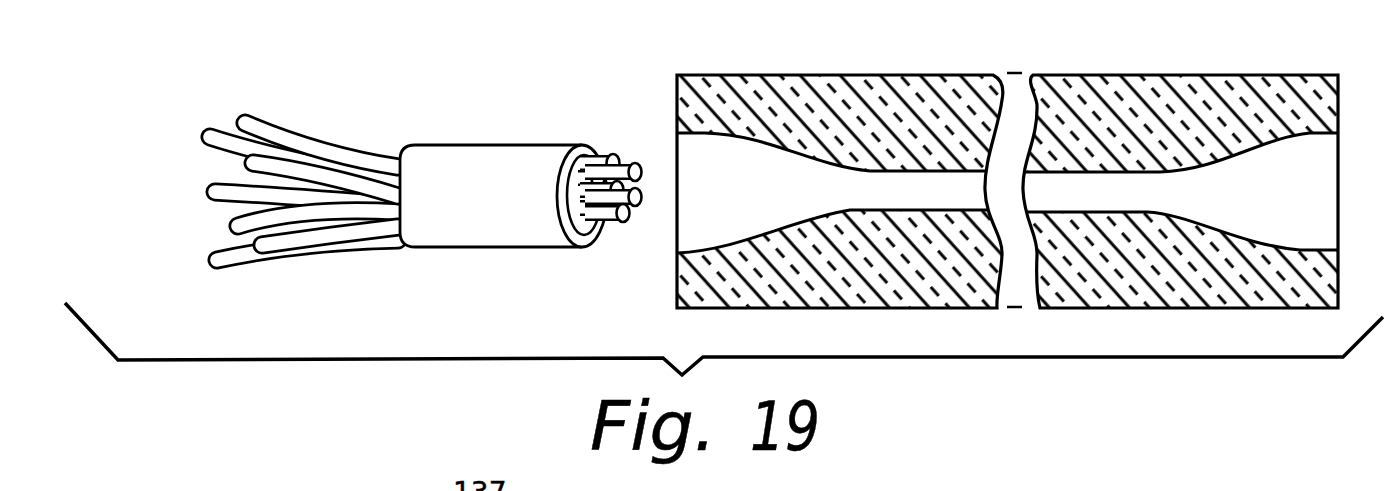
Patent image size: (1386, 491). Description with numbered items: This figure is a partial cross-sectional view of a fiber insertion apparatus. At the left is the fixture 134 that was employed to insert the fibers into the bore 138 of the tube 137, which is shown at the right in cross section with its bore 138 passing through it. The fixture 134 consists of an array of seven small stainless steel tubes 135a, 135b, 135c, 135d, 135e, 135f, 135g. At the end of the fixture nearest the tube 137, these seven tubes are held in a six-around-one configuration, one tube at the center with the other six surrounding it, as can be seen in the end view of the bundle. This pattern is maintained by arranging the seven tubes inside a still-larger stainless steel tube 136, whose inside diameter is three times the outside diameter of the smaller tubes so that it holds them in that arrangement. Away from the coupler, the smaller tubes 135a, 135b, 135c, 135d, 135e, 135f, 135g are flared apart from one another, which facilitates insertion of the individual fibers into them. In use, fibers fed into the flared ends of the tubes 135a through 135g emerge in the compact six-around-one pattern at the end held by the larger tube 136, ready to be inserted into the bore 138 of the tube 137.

The fixture 134 is at (488, 104).
The stainless steel tube 135a is at (367, 183).
The stainless steel tube 135b is at (268, 126).
The stainless steel tube 135c is at (201, 124).
The stainless steel tube 135d is at (206, 264).
The stainless steel tube 135e is at (364, 238).
The stainless steel tube 135f is at (293, 213).
The stainless steel tube 135g is at (206, 192).
The larger stainless steel tube 136 is at (537, 145).
The tube 137 is at (862, 73).
The bore 138 is at (946, 212).